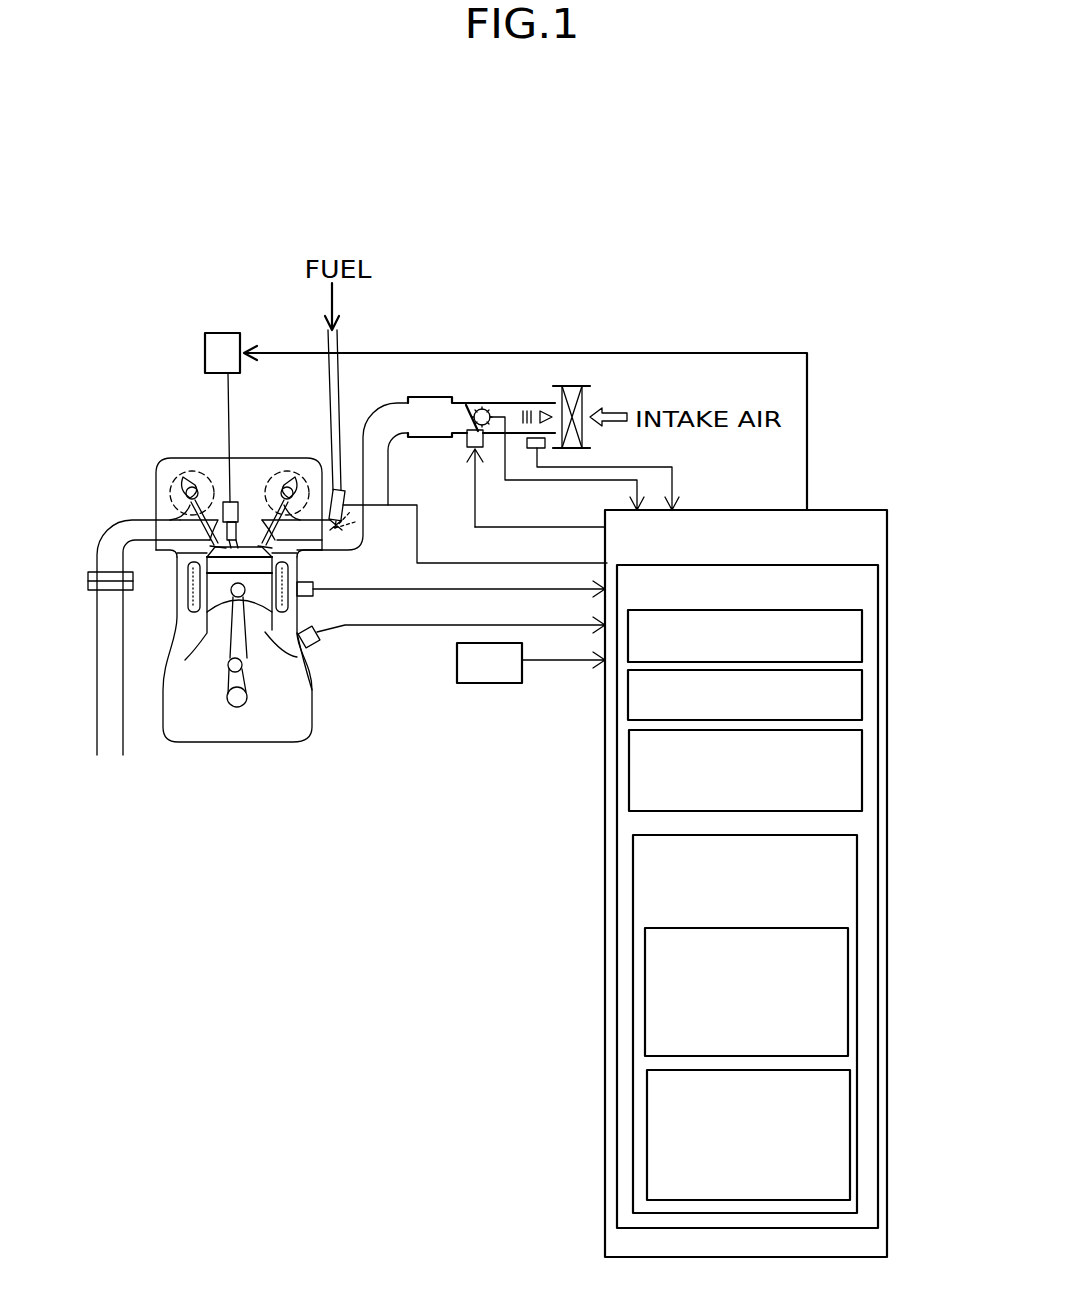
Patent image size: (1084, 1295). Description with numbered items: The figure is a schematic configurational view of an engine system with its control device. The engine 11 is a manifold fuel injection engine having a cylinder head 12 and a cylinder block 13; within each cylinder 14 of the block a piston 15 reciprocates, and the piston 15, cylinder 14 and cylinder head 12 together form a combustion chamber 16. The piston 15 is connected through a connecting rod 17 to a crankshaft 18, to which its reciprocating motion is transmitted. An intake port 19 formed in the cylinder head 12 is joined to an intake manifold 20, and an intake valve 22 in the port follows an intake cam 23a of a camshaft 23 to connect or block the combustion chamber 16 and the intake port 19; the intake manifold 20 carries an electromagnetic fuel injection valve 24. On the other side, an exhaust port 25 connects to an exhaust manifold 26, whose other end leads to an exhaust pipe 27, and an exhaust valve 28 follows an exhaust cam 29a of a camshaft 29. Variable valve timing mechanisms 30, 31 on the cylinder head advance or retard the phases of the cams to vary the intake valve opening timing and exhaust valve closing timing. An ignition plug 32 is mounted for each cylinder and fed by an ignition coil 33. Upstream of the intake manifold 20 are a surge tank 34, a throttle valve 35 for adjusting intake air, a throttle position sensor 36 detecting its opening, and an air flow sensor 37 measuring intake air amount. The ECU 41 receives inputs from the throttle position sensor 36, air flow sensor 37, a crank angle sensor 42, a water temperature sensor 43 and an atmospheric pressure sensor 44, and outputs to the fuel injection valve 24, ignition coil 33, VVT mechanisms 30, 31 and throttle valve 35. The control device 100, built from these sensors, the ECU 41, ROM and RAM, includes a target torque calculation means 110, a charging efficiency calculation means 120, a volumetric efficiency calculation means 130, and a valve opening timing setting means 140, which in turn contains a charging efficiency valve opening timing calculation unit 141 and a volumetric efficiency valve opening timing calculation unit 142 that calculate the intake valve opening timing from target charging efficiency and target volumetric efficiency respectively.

The engine 11 is at (121, 408).
The cylinder head 12 is at (200, 460).
The cylinder block 13 is at (190, 628).
The cylinder 14 is at (308, 670).
The piston 15 is at (285, 603).
The combustion chamber 16 is at (227, 563).
The connecting rod 17 is at (228, 625).
The crankshaft 18 is at (240, 672).
The intake port 19 is at (250, 475).
The intake manifold 20 is at (333, 542).
The intake valve 22 is at (274, 470).
The camshaft 23 is at (339, 488).
The intake cam 23a is at (334, 518).
The fuel injection valve 24 is at (343, 505).
The exhaust port 25 is at (224, 490).
The exhaust manifold 26 is at (180, 500).
The exhaust pipe 27 is at (97, 560).
The exhaust valve 28 is at (125, 518).
The camshaft 29 is at (173, 488).
The exhaust cam 29a is at (182, 477).
The variable valve timing mechanism 30 is at (335, 412).
The variable valve timing mechanism 31 is at (190, 470).
The ignition plug 32 is at (240, 470).
The ignition coil 33 is at (219, 345).
The surge tank 34 is at (440, 400).
The throttle valve 35 is at (470, 405).
The throttle position sensor 36 is at (492, 412).
The air flow sensor 37 is at (533, 438).
The ECU 41 is at (847, 508).
The crank angle sensor 42 is at (323, 647).
The water temperature sensor 43 is at (314, 586).
The atmospheric pressure sensor 44 is at (457, 668).
The control device 100 is at (870, 562).
The target torque calculation means 110 is at (863, 632).
The charging efficiency calculation means 120 is at (863, 688).
The volumetric efficiency calculation means 130 is at (863, 760).
The valve opening timing setting means 140 is at (858, 892).
The charging efficiency valve opening timing calculation unit 141 is at (849, 948).
The volumetric efficiency valve opening timing calculation unit 142 is at (850, 1110).